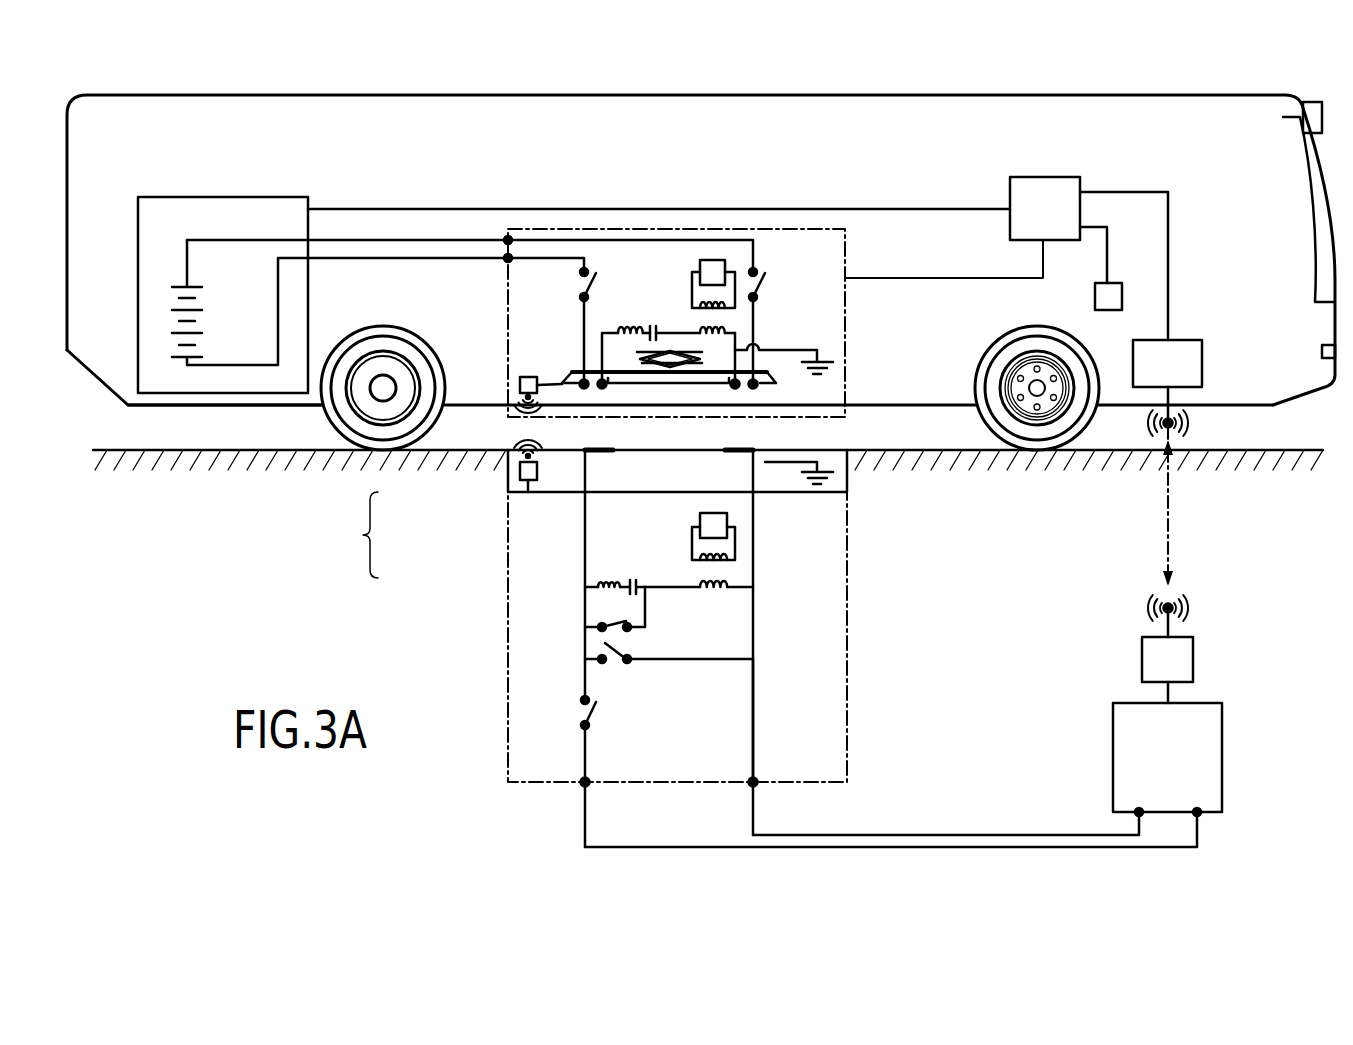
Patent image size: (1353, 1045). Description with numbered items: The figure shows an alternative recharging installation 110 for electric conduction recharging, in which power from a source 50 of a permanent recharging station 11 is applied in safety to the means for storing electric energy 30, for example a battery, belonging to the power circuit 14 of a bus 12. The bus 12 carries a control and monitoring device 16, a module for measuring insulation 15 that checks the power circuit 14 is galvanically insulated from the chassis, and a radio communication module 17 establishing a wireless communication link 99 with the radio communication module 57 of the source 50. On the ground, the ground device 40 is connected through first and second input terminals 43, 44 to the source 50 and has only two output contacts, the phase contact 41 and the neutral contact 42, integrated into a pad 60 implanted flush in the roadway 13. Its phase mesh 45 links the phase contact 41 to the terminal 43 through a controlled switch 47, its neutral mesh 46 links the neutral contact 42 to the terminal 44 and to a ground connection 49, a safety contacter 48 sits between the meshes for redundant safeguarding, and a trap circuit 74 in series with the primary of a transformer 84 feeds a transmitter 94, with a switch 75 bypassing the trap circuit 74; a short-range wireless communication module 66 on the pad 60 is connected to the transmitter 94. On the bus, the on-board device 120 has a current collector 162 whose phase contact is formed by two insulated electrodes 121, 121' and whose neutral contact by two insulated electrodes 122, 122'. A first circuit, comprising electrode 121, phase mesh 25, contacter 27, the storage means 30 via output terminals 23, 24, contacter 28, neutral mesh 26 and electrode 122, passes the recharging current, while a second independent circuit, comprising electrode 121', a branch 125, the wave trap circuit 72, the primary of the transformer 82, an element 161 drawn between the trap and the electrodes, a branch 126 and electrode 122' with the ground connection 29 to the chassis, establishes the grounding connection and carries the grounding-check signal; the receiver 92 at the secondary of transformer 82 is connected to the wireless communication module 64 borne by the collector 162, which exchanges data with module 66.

The permanent recharging station 11 is at (1258, 595).
The bus 12 is at (1168, 84).
The roadway 13 is at (1287, 450).
The power circuit 14 is at (128, 376).
The module for measuring insulation 15 is at (1095, 292).
The control and monitoring device 16 is at (1089, 258).
The radio communication module 17 is at (1167, 388).
The first output terminal 23 is at (505, 259).
The second output terminal 24 is at (505, 240).
The phase mesh 25 is at (584, 336).
The neutral mesh 26 is at (757, 314).
The controlled contacter 27 is at (580, 284).
The controlled contacter 28 is at (767, 284).
The ground connection 29 is at (808, 347).
The means for storing electric energy 30 is at (158, 318).
The ground device 40 is at (498, 595).
The phase contact 41 is at (592, 457).
The neutral contact 42 is at (742, 456).
The first input terminal 43 is at (583, 785).
The second input terminal 44 is at (751, 785).
The phase mesh 45 is at (585, 675).
The neutral mesh 46 is at (753, 709).
The controlled switch 47 is at (585, 712).
The safety contacter 48 is at (619, 662).
The ground connection 49 is at (783, 470).
The source 50 is at (1229, 693).
The radio communication module 57 is at (1167, 649).
The pad 60 is at (850, 483).
The wireless communication module 64 is at (519, 382).
The wireless communication module 66 is at (532, 485).
The wave trap circuit 72 is at (612, 312).
The trap circuit 74 is at (612, 566).
The switch 75 is at (600, 620).
The transformer 82 is at (686, 320).
The transformer 84 is at (745, 573).
The receiver 92 is at (700, 267).
The transmitter 94 is at (700, 521).
The wireless communication link 99 is at (1170, 527).
The installation 110 is at (350, 535).
The on-board device 120 is at (500, 428).
The electrode 121 is at (578, 406).
The electrode 121' is at (619, 406).
The electrode 122 is at (766, 406).
The electrode 122' is at (716, 406).
The vehicle-side detection branch 125 is at (602, 357).
The vehicle-side return branch 126 is at (738, 363).
The detection element 161 is at (687, 355).
The current collector 162 is at (772, 378).